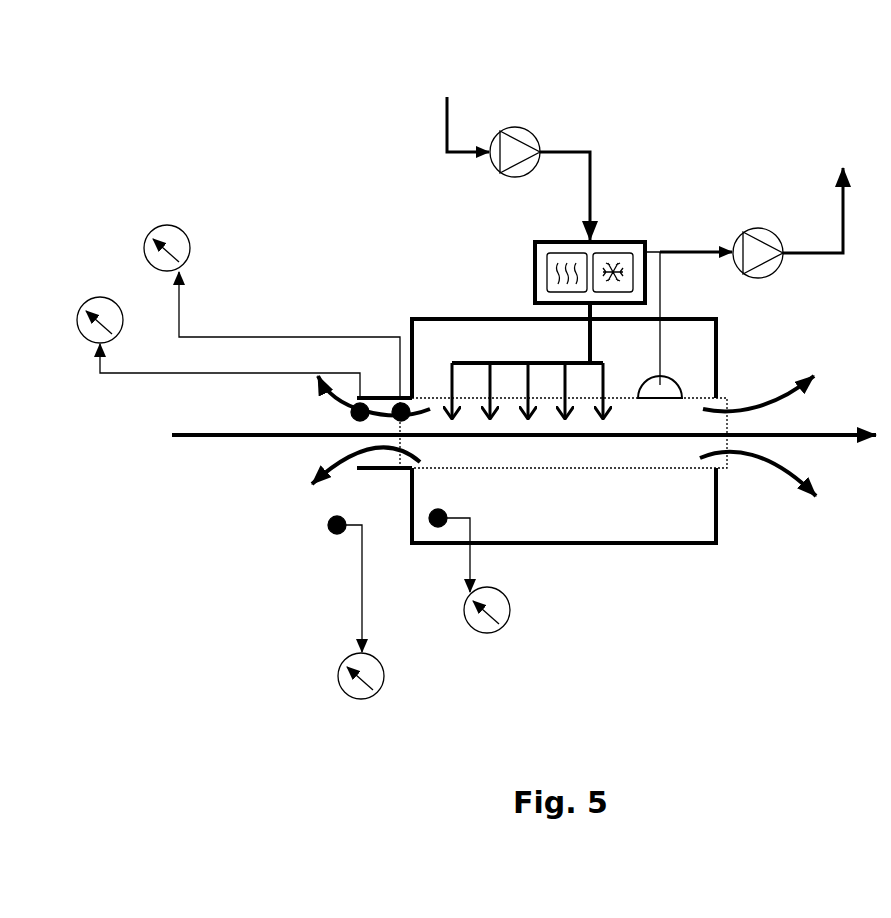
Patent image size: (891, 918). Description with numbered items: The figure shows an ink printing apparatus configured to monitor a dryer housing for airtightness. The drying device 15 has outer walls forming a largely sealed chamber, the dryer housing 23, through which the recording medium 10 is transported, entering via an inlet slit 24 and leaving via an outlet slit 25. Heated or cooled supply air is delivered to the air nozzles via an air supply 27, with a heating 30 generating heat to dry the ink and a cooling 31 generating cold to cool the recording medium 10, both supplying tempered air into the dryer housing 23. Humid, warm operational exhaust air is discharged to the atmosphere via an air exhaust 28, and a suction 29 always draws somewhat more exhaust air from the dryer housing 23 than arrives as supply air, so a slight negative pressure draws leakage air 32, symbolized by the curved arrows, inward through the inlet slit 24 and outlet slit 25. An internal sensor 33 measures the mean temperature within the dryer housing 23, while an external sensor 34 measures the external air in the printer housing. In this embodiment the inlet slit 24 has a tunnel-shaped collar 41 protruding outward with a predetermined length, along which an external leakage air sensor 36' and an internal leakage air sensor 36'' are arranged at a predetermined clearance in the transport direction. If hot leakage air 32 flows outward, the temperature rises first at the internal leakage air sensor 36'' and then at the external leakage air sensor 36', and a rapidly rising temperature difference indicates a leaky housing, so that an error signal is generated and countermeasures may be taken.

The recording medium 10 is at (514, 438).
The drying device 15 is at (571, 463).
The dryer housing 23 is at (717, 527).
The inlet slit 24 is at (421, 463).
The outlet slit 25 is at (701, 448).
The air supply 27 is at (518, 114).
The air exhaust 28 is at (757, 217).
The suction 29 is at (668, 384).
The heating 30 is at (548, 270).
The cooling 31 is at (610, 255).
The leakage air 32 is at (325, 392).
The internal sensor 33 is at (512, 605).
The external sensor 34 is at (386, 670).
The external leakage air sensor 36' is at (195, 320).
The internal leakage air sensor 36'' is at (272, 283).
The tunnel-shaped collar 41 is at (376, 472).